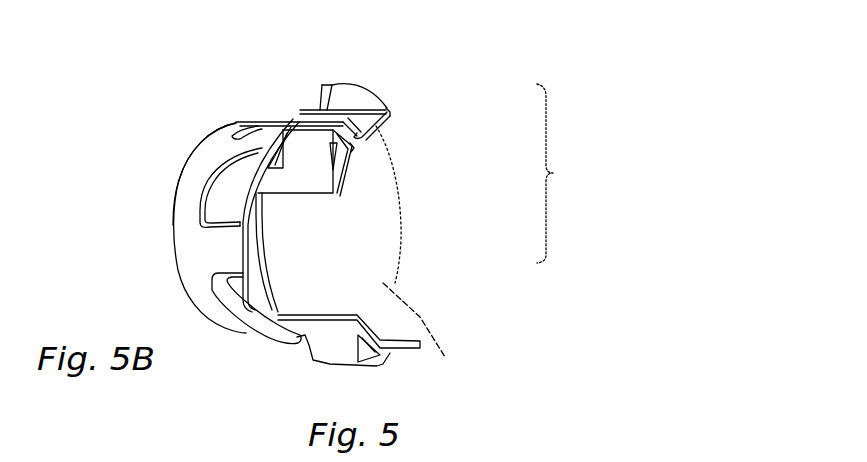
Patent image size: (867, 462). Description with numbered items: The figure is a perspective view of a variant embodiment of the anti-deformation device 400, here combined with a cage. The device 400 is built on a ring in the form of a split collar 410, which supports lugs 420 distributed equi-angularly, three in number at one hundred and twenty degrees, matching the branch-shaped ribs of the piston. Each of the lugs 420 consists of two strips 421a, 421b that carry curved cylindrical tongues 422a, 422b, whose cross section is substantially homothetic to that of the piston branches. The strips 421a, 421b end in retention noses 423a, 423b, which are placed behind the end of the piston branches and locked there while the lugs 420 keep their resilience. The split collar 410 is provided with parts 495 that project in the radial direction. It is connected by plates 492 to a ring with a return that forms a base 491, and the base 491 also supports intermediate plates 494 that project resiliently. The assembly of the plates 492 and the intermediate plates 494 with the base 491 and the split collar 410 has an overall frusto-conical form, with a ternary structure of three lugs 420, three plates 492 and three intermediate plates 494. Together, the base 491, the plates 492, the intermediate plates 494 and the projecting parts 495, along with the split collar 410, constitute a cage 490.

The anti-deformation device 400 is at (392, 74).
The ring in the form of a split collar 410 is at (280, 322).
The lugs 420 is at (485, 220).
The strip 421a is at (339, 113).
The strip 421b is at (310, 188).
The curved cylindrical tongue 422a is at (368, 141).
The curved cylindrical tongue 422b is at (316, 157).
The retention nose 423a is at (393, 116).
The retention nose 423b is at (358, 151).
The cage 490 is at (167, 233).
The base 491 is at (174, 205).
The plates 492 is at (232, 252).
The intermediate plates 494 is at (268, 140).
The projecting parts 495 is at (246, 302).